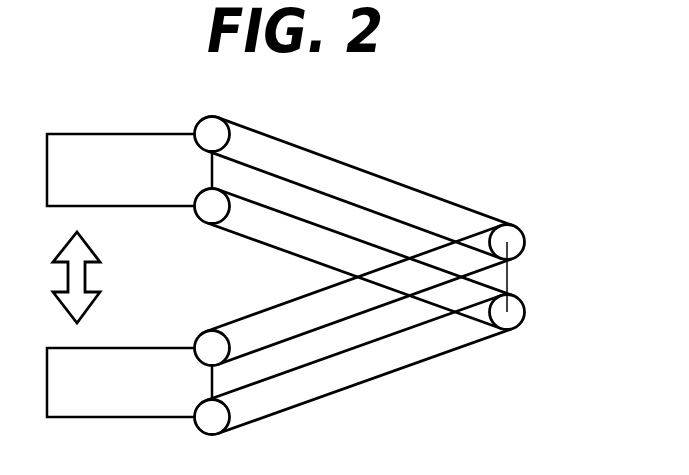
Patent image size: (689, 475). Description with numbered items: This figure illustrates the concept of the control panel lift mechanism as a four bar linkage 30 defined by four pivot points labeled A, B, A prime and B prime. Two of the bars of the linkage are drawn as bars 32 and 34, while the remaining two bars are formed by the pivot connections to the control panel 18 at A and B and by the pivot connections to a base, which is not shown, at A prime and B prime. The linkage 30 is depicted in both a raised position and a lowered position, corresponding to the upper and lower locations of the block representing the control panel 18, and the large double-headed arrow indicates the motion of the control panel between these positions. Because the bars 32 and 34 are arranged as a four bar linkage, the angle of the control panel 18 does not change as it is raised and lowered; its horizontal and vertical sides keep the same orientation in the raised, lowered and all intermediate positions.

The control panel 18 is at (82, 185).
The four bar linkage 30 is at (528, 195).
The bar 32 is at (378, 184).
The bar 34 is at (300, 256).